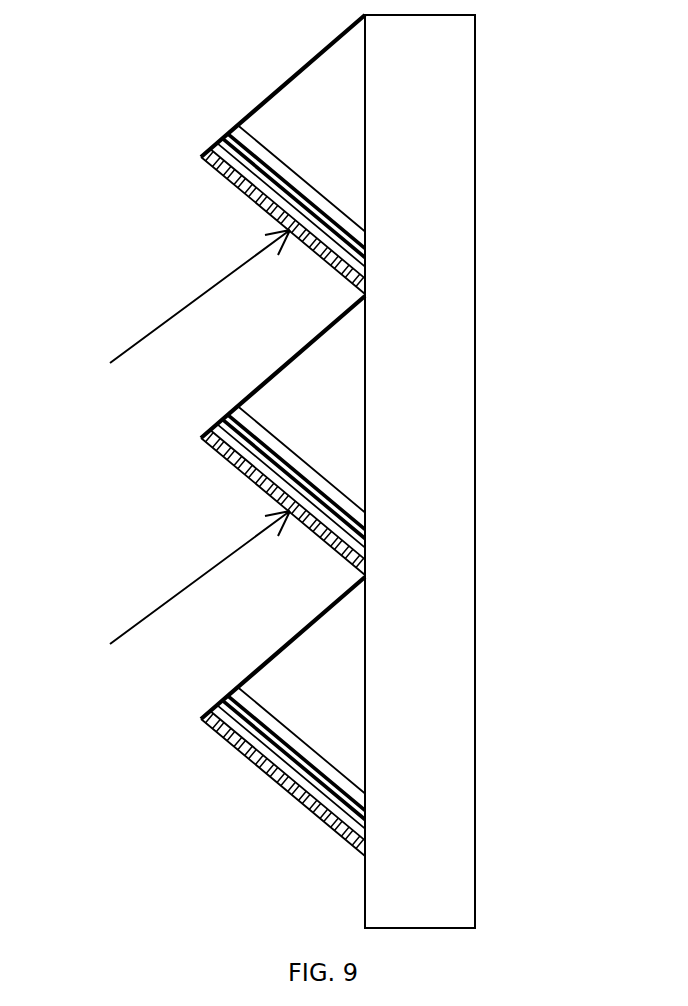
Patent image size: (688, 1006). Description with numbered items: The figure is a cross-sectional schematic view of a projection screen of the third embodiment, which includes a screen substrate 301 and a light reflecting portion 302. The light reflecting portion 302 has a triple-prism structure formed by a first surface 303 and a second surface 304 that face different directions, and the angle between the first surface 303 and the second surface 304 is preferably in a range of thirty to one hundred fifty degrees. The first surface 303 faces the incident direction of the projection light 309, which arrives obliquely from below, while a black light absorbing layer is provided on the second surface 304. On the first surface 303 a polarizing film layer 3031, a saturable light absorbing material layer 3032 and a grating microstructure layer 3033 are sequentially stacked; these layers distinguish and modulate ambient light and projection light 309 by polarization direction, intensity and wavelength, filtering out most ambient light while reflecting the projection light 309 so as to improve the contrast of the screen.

The screen substrate 301 is at (445, 150).
The light reflecting portion 302 is at (347, 452).
The first surface 303 is at (262, 212).
The second surface 304 is at (260, 103).
The polarizing film layer 3031 is at (210, 168).
The saturable light absorbing material layer 3032 is at (366, 253).
The grating microstructure layer 3033 is at (273, 157).
The projection light 309 is at (145, 340).